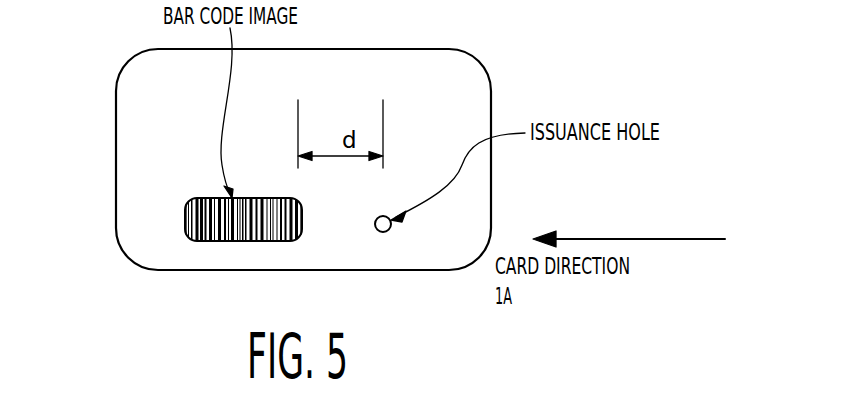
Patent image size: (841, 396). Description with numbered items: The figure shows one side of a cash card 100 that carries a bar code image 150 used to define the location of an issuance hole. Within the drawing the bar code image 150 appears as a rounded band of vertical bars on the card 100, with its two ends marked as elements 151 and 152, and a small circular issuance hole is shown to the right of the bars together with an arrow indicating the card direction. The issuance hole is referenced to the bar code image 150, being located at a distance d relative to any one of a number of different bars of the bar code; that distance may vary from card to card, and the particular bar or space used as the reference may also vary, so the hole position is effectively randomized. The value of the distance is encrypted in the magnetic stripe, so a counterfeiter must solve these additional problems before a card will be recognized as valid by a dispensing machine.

The card 100 is at (131, 105).
The bar code image 150 is at (230, 236).
The leading end of bar code image 151 is at (186, 218).
The trailing end of bar code image 152 is at (302, 223).